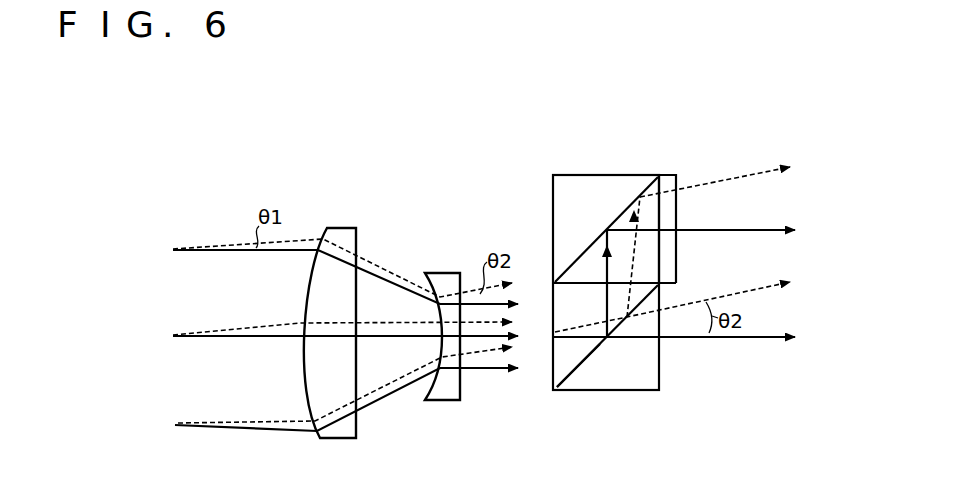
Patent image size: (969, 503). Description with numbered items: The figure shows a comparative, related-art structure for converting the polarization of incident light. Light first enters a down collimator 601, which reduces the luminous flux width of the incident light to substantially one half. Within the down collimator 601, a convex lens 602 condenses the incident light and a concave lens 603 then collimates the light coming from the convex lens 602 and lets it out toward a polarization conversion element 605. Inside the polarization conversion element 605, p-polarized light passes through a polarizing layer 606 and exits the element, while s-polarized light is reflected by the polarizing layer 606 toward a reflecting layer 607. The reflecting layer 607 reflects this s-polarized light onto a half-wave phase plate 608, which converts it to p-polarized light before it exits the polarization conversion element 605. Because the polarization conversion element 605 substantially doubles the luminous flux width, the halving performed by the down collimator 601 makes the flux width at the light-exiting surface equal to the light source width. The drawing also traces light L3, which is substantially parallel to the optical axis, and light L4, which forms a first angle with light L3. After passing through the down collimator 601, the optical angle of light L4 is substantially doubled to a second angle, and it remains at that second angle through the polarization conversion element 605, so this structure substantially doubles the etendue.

The down collimator 601 is at (475, 205).
The convex lens 602 is at (357, 231).
The concave lens 603 is at (433, 273).
The polarization conversion element 605 is at (584, 148).
The polarizing layer 606 is at (567, 381).
The reflecting layer 607 is at (659, 177).
The λ/2-phase plate 608 is at (676, 183).
The light L3 is at (286, 252).
The light L4 is at (314, 238).